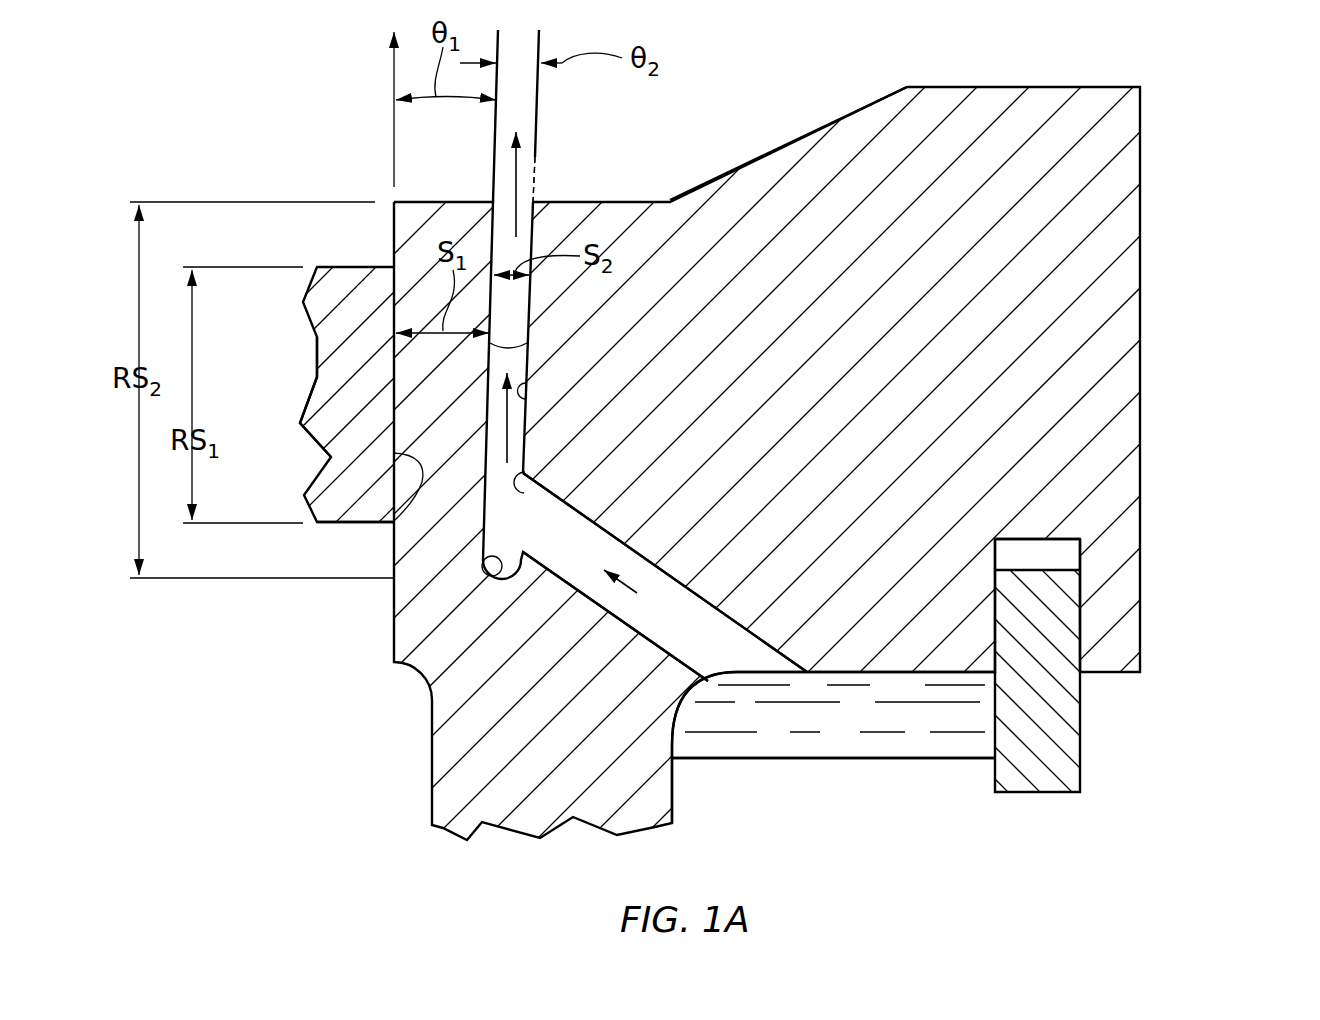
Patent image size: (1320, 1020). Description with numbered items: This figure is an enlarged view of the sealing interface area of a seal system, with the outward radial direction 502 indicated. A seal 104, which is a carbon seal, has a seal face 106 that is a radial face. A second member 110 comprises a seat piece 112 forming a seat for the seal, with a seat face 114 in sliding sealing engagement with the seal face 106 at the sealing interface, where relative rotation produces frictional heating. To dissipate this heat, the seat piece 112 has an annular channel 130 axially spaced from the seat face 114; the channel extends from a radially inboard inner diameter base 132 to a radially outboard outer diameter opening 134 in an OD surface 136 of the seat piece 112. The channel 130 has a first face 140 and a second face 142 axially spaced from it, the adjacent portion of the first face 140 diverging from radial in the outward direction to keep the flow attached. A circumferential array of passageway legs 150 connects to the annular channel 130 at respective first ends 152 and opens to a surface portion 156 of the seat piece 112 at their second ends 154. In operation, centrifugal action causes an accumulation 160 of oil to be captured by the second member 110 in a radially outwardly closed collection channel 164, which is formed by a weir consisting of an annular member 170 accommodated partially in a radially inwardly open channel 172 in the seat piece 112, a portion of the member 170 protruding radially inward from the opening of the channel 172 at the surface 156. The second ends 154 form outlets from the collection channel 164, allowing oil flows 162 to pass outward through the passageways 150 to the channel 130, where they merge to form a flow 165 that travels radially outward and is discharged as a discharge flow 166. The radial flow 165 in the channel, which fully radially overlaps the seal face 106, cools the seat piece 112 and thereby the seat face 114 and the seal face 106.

The second member 110 is at (1160, 155).
The seat piece 112 is at (1072, 292).
The OD surface 136 is at (627, 200).
The annular channel 130 is at (512, 311).
The OD opening 134 is at (528, 195).
The discharge flow 166 is at (518, 163).
The first face 140 is at (527, 344).
The second face 142 is at (527, 398).
The first ends 152 is at (527, 476).
The ID base 132 is at (484, 574).
The passageway legs 150 is at (586, 582).
The oil flows 162 is at (637, 597).
The second ends 154 is at (730, 675).
The surface portion 156 is at (837, 728).
The accumulation 160 is at (766, 737).
The collection channel 164 is at (947, 784).
The radially inwardly open channel 172 is at (1060, 551).
The annular member 170 is at (1052, 735).
The seal 104 is at (330, 500).
The seal face 106 is at (393, 523).
The seat face 114 is at (393, 413).
The flow 165 is at (492, 418).
The outward radial direction 502 is at (392, 68).